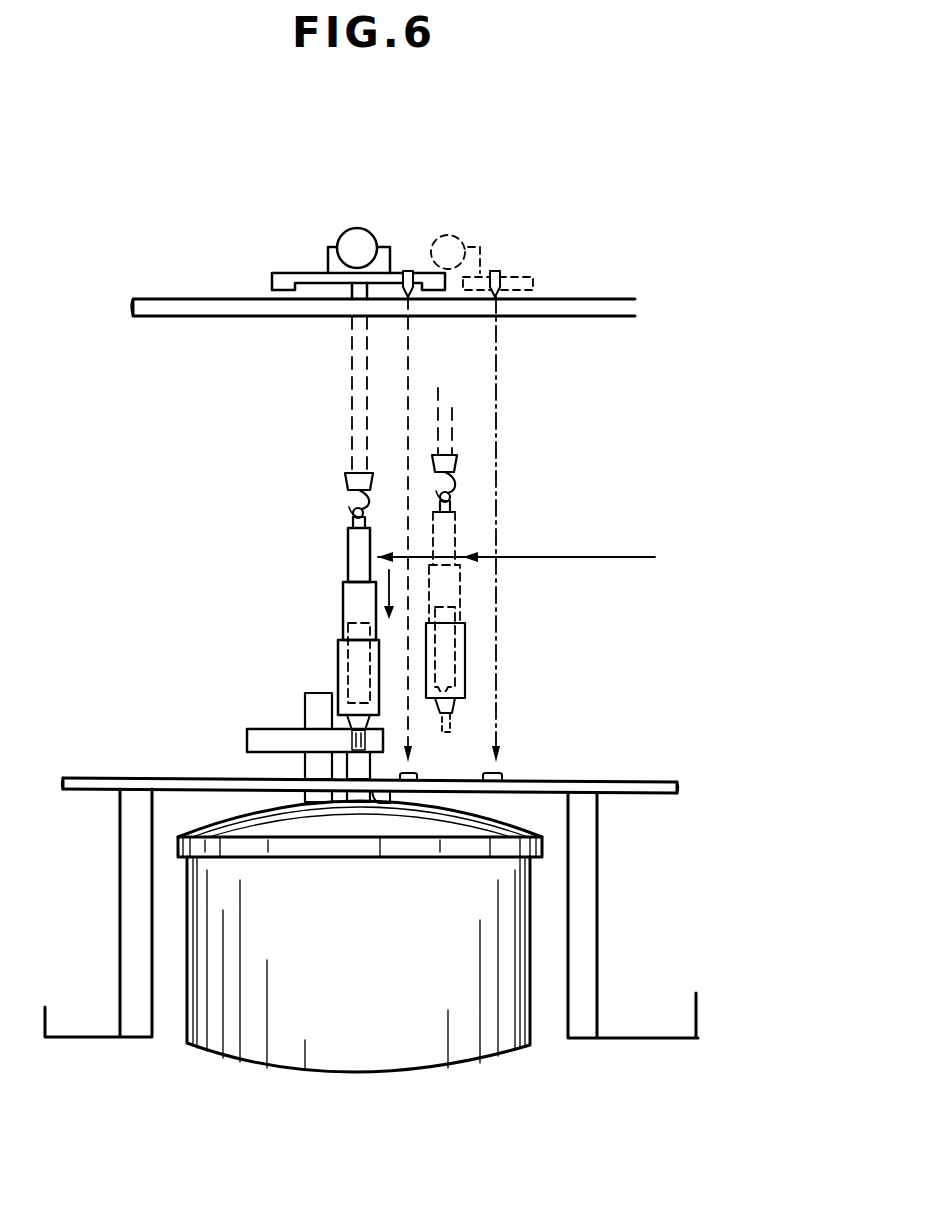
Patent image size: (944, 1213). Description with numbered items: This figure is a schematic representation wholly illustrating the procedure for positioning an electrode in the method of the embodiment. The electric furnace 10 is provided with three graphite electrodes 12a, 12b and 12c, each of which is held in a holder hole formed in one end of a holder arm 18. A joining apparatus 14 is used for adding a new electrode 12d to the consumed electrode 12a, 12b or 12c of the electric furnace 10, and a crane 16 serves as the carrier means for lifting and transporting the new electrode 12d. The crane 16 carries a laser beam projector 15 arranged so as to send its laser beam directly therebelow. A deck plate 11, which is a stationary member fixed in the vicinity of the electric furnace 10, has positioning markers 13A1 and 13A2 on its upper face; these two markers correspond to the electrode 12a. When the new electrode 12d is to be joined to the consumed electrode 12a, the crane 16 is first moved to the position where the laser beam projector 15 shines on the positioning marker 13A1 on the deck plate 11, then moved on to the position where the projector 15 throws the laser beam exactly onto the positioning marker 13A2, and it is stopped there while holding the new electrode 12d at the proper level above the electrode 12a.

The electric furnace 10 is at (488, 1075).
The deck plate 11 is at (592, 790).
The electrode 12a is at (370, 766).
The electrode 12b is at (307, 703).
The electrode 12c is at (386, 868).
The new electrode 12d is at (355, 655).
The positioning marker 13A1 is at (505, 778).
The positioning marker 13A2 is at (433, 764).
The joining apparatus 14 is at (322, 586).
The laser beam projector 15 is at (409, 270).
The crane 16 is at (316, 245).
The holder arm 18 is at (250, 728).